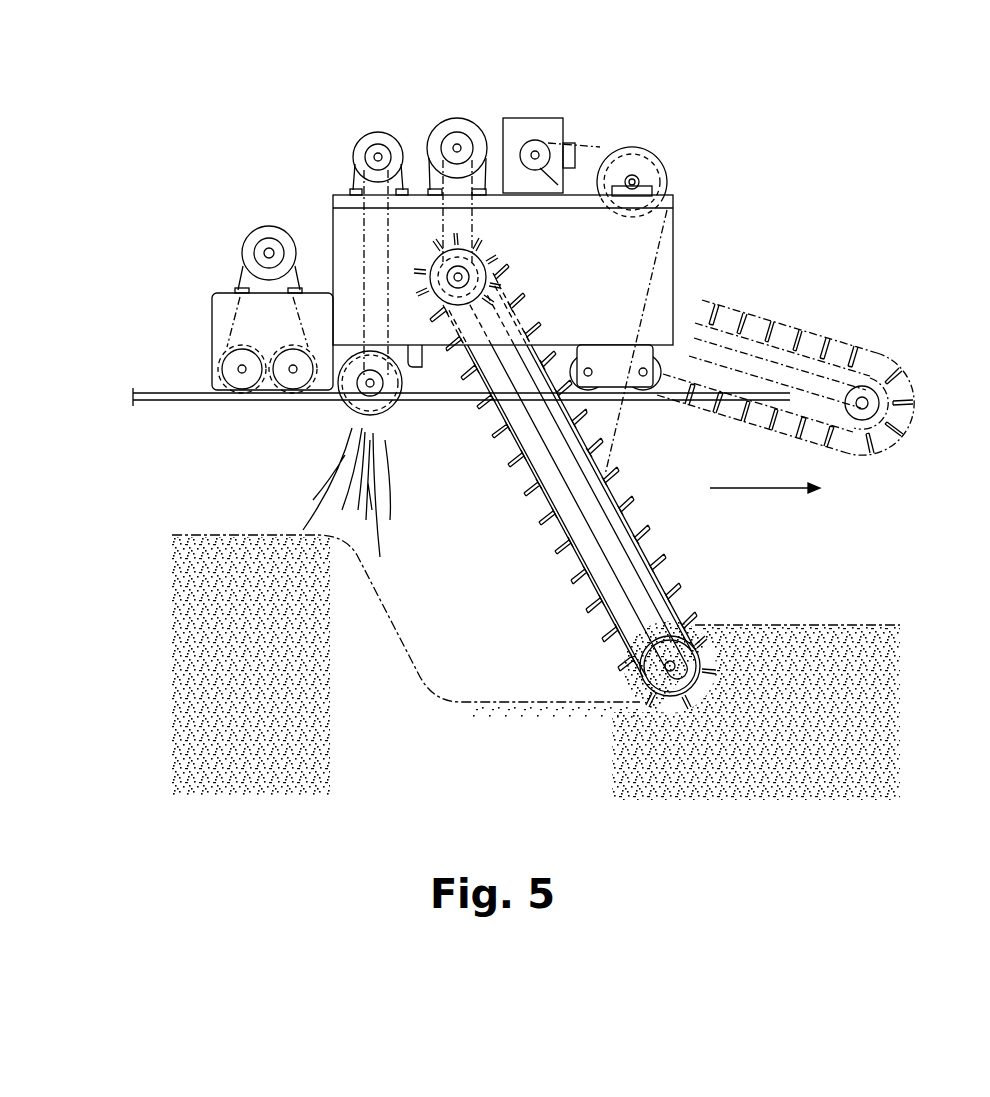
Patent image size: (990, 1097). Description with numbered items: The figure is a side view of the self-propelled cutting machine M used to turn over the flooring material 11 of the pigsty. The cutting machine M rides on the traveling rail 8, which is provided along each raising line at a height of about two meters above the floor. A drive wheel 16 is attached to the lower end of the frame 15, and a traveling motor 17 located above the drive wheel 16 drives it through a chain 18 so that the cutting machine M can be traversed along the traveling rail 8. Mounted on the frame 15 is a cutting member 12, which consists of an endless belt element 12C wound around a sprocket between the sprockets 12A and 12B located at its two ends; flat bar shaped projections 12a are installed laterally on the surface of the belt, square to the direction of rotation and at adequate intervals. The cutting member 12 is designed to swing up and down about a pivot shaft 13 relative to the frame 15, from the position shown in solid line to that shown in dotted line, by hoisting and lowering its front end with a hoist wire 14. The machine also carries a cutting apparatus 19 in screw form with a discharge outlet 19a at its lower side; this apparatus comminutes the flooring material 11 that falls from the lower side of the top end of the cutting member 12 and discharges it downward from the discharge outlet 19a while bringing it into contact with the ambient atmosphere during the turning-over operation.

The cutting machine M is at (502, 106).
The frame 15 is at (340, 195).
The chain 18 is at (233, 336).
The traveling motor 17 is at (256, 245).
The traveling rail 8 is at (163, 393).
The pivot shaft 13 is at (477, 263).
The sprocket 12B is at (480, 282).
The hoist wire 14 is at (660, 255).
The drive wheel 16 is at (238, 396).
The cutting apparatus 19 is at (390, 402).
The discharge outlet 19a is at (387, 425).
The flooring material 11 is at (242, 553).
The cutting member 12 is at (533, 507).
The endless belt element 12C is at (574, 562).
The flat bar shaped projection 12a is at (608, 655).
The sprocket 12A is at (697, 622).